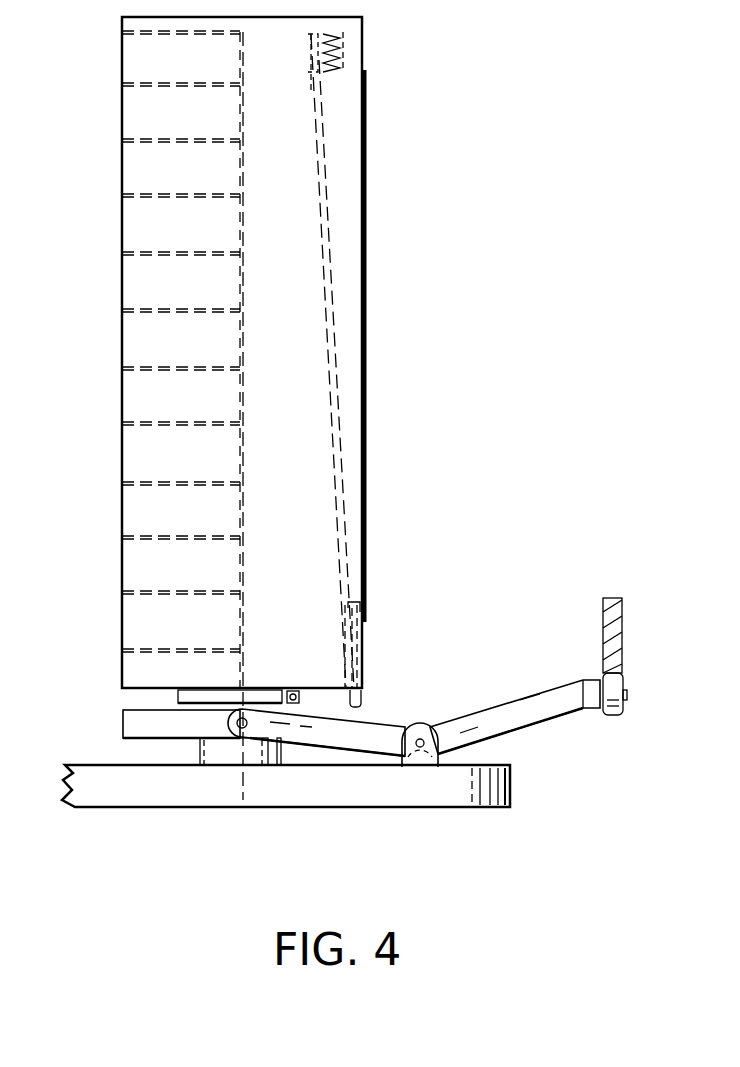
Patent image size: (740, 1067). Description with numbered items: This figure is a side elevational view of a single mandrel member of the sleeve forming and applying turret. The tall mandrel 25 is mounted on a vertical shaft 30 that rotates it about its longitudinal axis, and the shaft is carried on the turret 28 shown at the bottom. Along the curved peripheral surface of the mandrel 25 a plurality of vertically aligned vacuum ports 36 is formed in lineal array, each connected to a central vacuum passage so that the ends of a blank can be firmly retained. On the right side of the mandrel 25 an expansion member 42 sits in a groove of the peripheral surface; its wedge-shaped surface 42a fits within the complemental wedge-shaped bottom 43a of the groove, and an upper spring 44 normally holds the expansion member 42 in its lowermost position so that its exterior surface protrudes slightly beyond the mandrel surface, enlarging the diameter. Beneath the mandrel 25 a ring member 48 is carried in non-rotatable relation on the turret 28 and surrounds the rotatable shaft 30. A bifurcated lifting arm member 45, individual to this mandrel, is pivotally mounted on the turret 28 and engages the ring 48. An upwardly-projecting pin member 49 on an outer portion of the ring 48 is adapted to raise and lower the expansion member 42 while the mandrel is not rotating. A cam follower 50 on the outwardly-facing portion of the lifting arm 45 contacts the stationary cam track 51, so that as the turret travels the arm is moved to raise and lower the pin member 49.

The mandrel 25 is at (252, 364).
The turret 28 is at (506, 819).
The vertical shaft 30 is at (200, 756).
The vacuum ports 36 is at (120, 368).
The expansion member 42 is at (348, 297).
The wedge-shaped surface 42a is at (336, 470).
The wedge-shaped bottom 43a is at (313, 185).
The upper spring 44 is at (346, 49).
The lifting arm member 45 is at (535, 725).
The ring member 48 is at (123, 722).
The pin member 49 is at (362, 698).
The cam follower 50 is at (623, 715).
The stationary cam track 51 is at (623, 630).